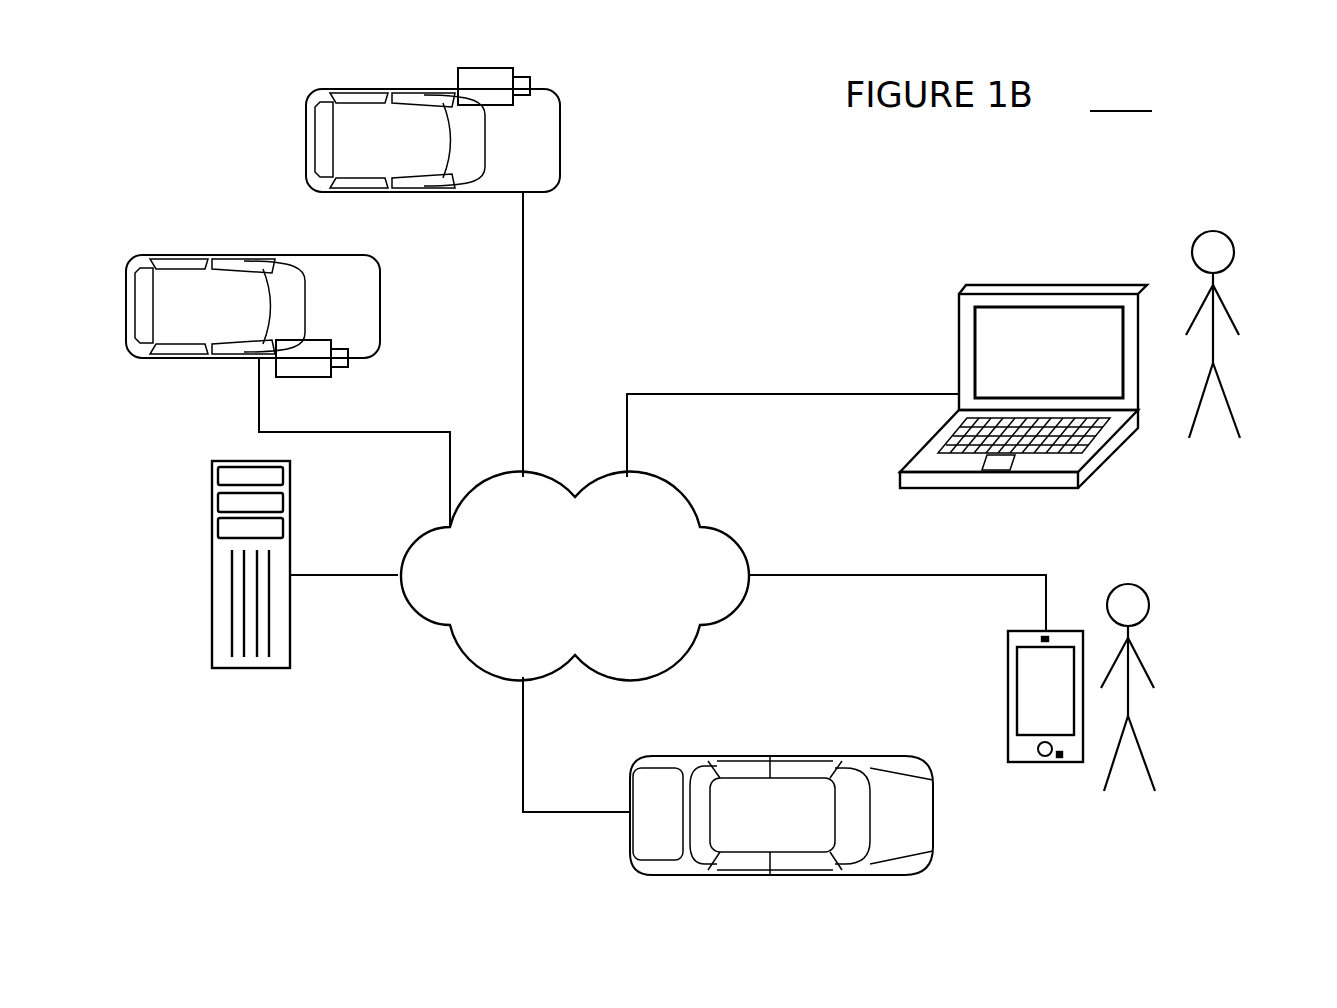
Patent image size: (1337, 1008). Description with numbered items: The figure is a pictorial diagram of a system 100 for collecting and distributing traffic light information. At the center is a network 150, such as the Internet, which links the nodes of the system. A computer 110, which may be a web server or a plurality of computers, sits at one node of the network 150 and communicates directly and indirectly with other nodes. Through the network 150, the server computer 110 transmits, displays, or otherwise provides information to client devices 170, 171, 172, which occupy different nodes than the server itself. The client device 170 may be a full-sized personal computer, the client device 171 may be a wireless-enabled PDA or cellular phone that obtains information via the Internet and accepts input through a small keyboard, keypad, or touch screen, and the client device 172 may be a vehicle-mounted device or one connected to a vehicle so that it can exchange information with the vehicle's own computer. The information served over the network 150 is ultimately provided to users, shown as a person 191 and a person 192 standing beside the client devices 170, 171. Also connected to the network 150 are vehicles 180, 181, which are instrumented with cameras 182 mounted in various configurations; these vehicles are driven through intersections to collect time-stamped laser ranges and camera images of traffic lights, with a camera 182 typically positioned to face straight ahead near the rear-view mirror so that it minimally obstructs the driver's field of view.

The system 100 is at (226, 150).
The computer 110 is at (212, 475).
The network 150 is at (575, 576).
The client device 170 is at (959, 328).
The client device 171 is at (1008, 655).
The client device 172 is at (630, 858).
The vehicle 180 is at (380, 302).
The vehicle 181 is at (562, 137).
The camera 182 is at (458, 70).
The person 191 is at (1233, 302).
The person 192 is at (1148, 670).